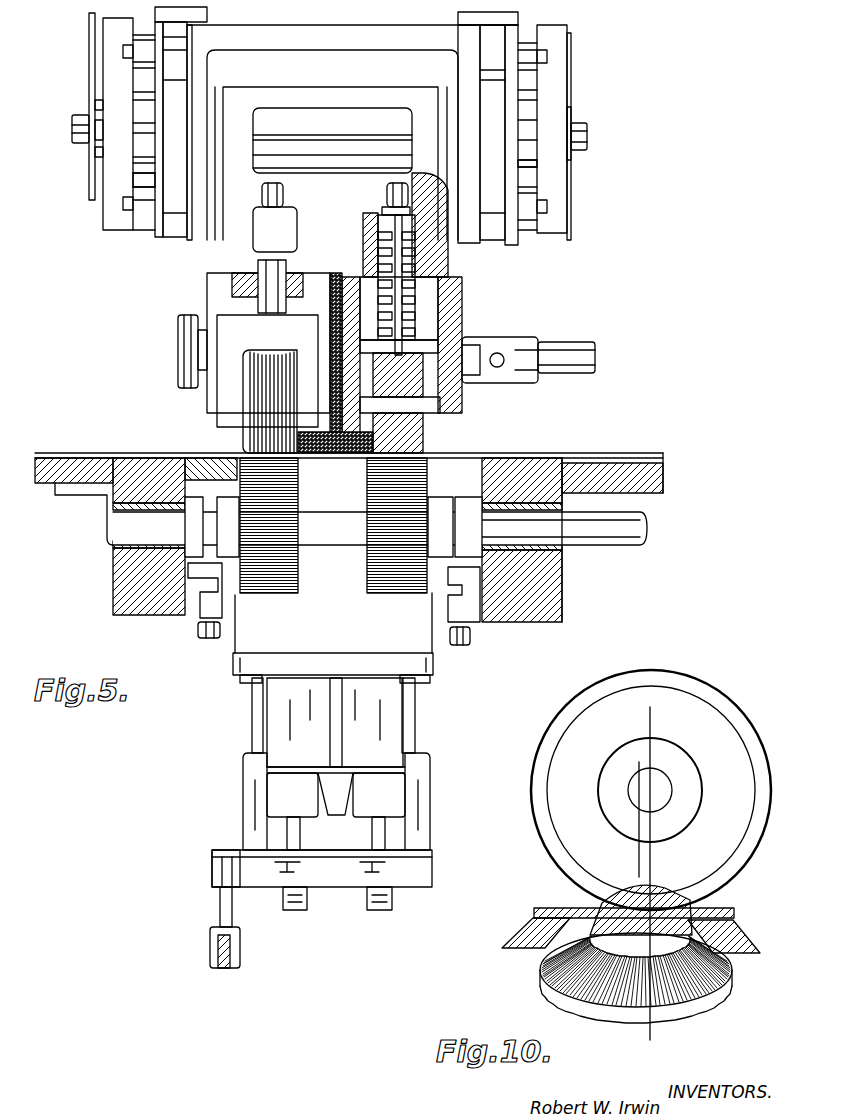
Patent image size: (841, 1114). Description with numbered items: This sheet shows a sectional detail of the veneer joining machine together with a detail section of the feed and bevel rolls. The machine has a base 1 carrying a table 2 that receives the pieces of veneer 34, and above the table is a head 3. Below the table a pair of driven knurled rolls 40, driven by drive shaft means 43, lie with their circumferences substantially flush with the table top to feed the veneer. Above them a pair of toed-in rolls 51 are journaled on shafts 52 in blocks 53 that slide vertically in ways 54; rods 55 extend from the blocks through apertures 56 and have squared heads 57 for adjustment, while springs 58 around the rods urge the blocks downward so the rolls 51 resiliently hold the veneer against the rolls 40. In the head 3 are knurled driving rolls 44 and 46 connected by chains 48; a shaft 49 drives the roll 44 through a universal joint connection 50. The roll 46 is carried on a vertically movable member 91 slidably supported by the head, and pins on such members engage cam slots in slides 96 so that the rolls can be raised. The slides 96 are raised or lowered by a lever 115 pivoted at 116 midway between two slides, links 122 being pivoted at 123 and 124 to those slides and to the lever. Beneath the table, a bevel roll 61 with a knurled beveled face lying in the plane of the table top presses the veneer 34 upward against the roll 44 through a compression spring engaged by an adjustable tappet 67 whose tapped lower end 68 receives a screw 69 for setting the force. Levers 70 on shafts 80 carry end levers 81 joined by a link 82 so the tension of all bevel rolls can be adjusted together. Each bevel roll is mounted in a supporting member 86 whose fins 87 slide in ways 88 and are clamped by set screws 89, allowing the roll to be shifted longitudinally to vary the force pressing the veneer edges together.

In FIG. 5, the base 1 is at (540, 618).
In FIG. 5, the table 2 is at (660, 487).
In FIG. 10, the table 2 is at (512, 950).
In FIG. 5, the head 3 is at (552, 182).
In FIG. 5, the pieces of veneer 34 is at (72, 452).
In FIG. 10, the pieces of veneer 34 is at (545, 908).
In FIG. 5, the driven knurled rolls 40 is at (295, 580).
In FIG. 5, the drive shaft means 43 is at (620, 546).
In FIG. 10, the knurled driving roll 44 is at (690, 682).
In FIG. 5, the knurled driving roll 46 is at (315, 430).
In FIG. 5, the chains 48 is at (178, 335).
In FIG. 5, the shaft 49 is at (578, 350).
In FIG. 5, the universal joint connection 50 is at (515, 345).
In FIG. 5, the toed-in rolls 51 is at (243, 437).
In FIG. 5, the shafts 52 is at (440, 412).
In FIG. 5, the blocks 53 is at (435, 385).
In FIG. 5, the ways 54 is at (455, 290).
In FIG. 5, the rods 55 is at (390, 232).
In FIG. 5, the apertures 56 is at (395, 215).
In FIG. 5, the squared heads 57 is at (397, 190).
In FIG. 5, the springs 58 is at (372, 265).
In FIG. 10, the bevel roll 61 is at (695, 1000).
In FIG. 5, the adjustable tappets 67 is at (372, 831).
In FIG. 5, the lower ends of tappets 68 is at (430, 840).
In FIG. 5, the screws 69 is at (432, 868).
In FIG. 5, the levers 70 is at (380, 910).
In FIG. 5, the shafts 80 is at (212, 865).
In FIG. 5, the levers 81 is at (232, 905).
In FIG. 5, the link 82 is at (225, 968).
In FIG. 5, the supporting member 86 is at (430, 665).
In FIG. 5, the fins 87 is at (205, 590).
In FIG. 5, the ways 88 is at (470, 590).
In FIG. 5, the set screws 89 is at (210, 640).
In FIG. 5, the vertically movable member 91 is at (448, 262).
In FIG. 5, the slides 96 is at (176, 190).
In FIG. 5, the lever 115 is at (105, 190).
In FIG. 5, the pivot 116 is at (75, 130).
In FIG. 5, the links 122 is at (120, 50).
In FIG. 5, the pivot 123 is at (123, 55).
In FIG. 5, the pivot 124 is at (140, 232).